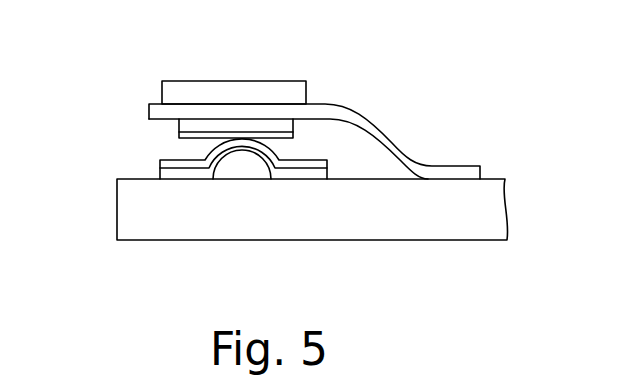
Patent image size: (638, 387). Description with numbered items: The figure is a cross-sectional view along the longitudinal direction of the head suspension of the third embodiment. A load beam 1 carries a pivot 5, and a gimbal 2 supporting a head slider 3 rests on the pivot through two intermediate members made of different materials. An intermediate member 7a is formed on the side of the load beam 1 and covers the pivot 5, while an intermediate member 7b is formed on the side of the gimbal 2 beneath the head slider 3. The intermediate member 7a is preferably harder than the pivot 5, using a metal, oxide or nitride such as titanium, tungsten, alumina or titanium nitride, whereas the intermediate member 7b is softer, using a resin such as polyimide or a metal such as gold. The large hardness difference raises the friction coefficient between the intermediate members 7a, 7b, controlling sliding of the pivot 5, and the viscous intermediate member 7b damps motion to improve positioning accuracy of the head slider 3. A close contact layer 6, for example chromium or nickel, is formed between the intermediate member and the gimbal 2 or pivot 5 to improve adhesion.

The load beam 1 is at (439, 227).
The gimbal 2 is at (383, 143).
The head slider 3 is at (270, 88).
The pivot 5 is at (240, 172).
The close contact layer 6 is at (280, 133).
The intermediate member 7a is at (187, 172).
The intermediate member 7b is at (187, 126).